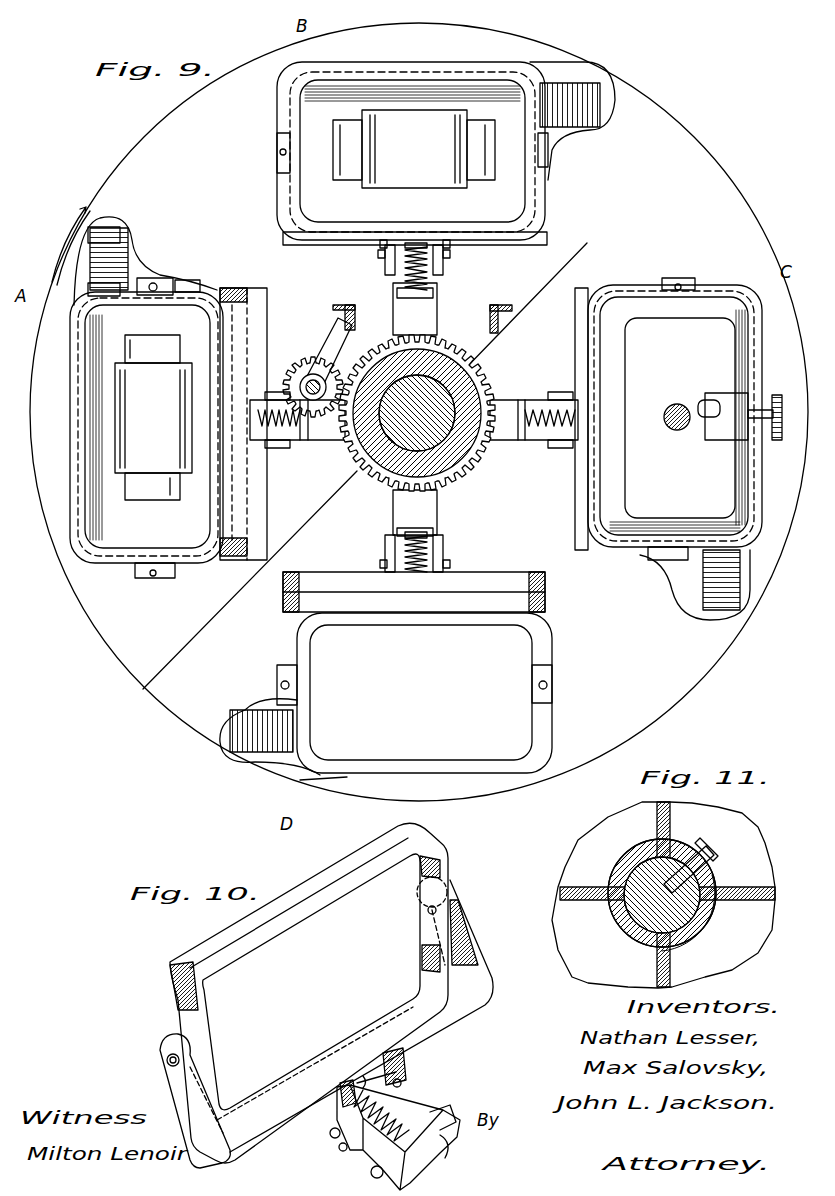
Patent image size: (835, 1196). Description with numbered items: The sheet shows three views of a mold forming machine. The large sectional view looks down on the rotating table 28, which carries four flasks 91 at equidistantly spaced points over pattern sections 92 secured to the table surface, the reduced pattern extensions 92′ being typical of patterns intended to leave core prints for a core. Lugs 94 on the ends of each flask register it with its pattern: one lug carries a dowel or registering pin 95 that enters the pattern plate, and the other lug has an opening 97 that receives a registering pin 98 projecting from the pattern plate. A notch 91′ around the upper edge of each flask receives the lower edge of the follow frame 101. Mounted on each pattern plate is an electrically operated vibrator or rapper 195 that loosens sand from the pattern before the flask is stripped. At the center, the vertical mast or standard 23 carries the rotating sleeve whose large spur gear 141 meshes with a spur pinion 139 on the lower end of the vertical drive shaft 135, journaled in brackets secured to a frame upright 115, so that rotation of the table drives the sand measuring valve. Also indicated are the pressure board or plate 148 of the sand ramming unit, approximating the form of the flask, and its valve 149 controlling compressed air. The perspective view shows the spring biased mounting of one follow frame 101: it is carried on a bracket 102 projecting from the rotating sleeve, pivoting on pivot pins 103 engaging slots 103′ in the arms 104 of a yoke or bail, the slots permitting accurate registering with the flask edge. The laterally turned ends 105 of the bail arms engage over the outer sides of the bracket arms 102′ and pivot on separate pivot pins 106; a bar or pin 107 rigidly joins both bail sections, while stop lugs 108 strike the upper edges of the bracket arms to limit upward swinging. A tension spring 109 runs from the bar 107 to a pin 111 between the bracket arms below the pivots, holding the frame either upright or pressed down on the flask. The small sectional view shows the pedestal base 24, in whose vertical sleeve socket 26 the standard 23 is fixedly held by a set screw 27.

In FIG. 9, the mast or standard 23 is at (492, 380).
In FIG. 11, the mast or standard 23 is at (635, 875).
In FIG. 11, the pedestal base 24 is at (765, 862).
In FIG. 11, the vertical sleeve socket 26 is at (605, 915).
In FIG. 11, the set screw 27 is at (712, 853).
In FIG. 9, the rotating table 28 is at (92, 640).
In FIG. 9, the flask 91 is at (462, 57).
In FIG. 9, the notch 91′ is at (85, 560).
In FIG. 9, the pattern section 92 is at (428, 190).
In FIG. 9, the reduced pattern extension 92′ is at (350, 182).
In FIG. 9, the lug 94 is at (278, 162).
In FIG. 9, the dowel or registering pin 95 is at (278, 152).
In FIG. 9, the opening 97 is at (550, 150).
In FIG. 9, the dowel or registering pin 98 is at (158, 284).
In FIG. 9, the follow frame 101 is at (312, 242).
In FIG. 10, the follow frame 101 is at (170, 980).
In FIG. 9, the bracket 102 is at (437, 320).
In FIG. 10, the bracket 102 is at (430, 1163).
In FIG. 9, the bracket arm 102′ is at (540, 396).
In FIG. 10, the bracket arm 102′ is at (432, 1112).
In FIG. 9, the pivot pin 103 is at (660, 565).
In FIG. 10, the pivot pin 103 is at (170, 1064).
In FIG. 10, the slot 103′ is at (166, 1056).
In FIG. 9, the arm of yoke or bail 104 is at (283, 238).
In FIG. 10, the arm of yoke or bail 104 is at (480, 1003).
In FIG. 9, the laterally turned end 105 is at (385, 252).
In FIG. 10, the laterally turned end 105 is at (397, 1050).
In FIG. 9, the pivot pin 106 is at (388, 270).
In FIG. 10, the pivot pin 106 is at (340, 1149).
In FIG. 9, the bar or pin 107 is at (675, 318).
In FIG. 10, the bar or pin 107 is at (365, 1078).
In FIG. 9, the stop lug 108 is at (383, 240).
In FIG. 10, the stop lug 108 is at (330, 1135).
In FIG. 9, the tension spring 109 is at (410, 268).
In FIG. 10, the tension spring 109 is at (357, 1117).
In FIG. 9, the pin 111 is at (420, 300).
In FIG. 10, the pin 111 is at (370, 1173).
In FIG. 9, the frame upright 115 is at (345, 308).
In FIG. 9, the drive shaft 135 is at (330, 345).
In FIG. 9, the spur pinion 139 is at (310, 379).
In FIG. 9, the spur gear 141 is at (365, 462).
In FIG. 9, the pressure board or plate 148 is at (742, 290).
In FIG. 9, the valve 149 is at (722, 430).
In FIG. 9, the vibrator or rapper 195 is at (590, 88).